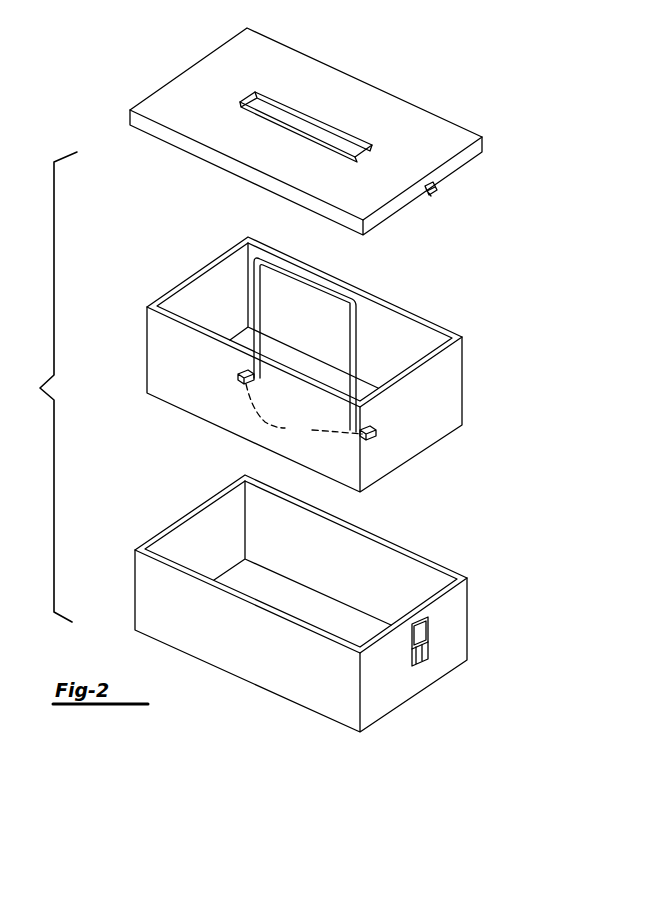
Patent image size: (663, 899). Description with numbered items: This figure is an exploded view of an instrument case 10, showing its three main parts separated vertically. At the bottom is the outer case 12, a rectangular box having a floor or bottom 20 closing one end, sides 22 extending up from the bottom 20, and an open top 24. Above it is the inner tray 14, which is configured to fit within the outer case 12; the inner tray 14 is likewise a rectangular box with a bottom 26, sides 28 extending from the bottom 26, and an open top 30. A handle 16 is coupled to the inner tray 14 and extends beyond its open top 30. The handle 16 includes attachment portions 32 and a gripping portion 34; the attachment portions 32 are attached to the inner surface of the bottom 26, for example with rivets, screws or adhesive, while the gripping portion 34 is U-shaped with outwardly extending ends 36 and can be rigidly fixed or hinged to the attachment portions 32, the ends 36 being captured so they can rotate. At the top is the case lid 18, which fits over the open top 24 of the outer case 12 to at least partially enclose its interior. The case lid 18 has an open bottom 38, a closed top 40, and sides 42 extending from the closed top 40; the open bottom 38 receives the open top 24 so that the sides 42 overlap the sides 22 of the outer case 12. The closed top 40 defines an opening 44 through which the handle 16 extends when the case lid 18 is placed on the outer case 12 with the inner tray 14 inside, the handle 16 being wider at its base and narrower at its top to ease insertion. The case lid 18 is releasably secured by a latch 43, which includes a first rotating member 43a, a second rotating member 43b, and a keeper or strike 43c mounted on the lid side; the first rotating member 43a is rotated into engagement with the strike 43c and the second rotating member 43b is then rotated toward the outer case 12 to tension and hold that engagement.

The instrument case 10 is at (44, 387).
The outer case 12 is at (155, 592).
The inner tray 14 is at (158, 347).
The handle 16 is at (357, 293).
The case lid 18 is at (160, 108).
The bottom 20 is at (331, 622).
The sides 22 is at (213, 556).
The open top 24 is at (353, 550).
The bottom 26 is at (272, 352).
The sides 28 is at (218, 314).
The open top 30 is at (232, 267).
The attachment portions 32 is at (238, 378).
The gripping portion 34 is at (323, 300).
The ends 36 is at (304, 411).
The open bottom 38 is at (414, 212).
The closed top 40 is at (419, 149).
The sides 42 is at (204, 52).
The latch 43 is at (441, 655).
The first rotating member 43a is at (432, 626).
The second rotating member 43b is at (428, 662).
The strike 43c is at (437, 190).
The opening 44 is at (293, 112).